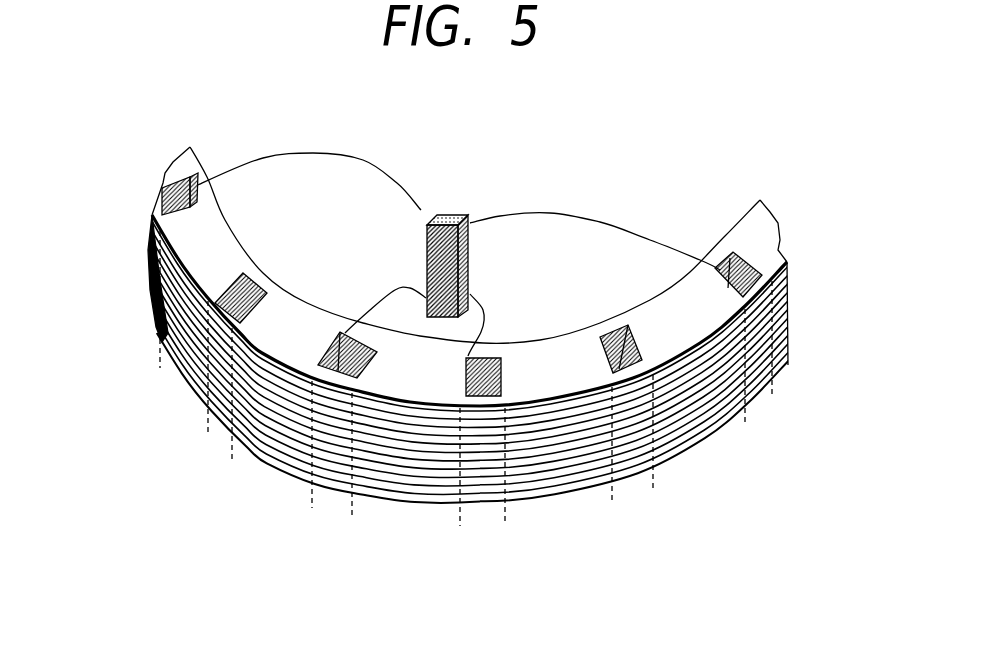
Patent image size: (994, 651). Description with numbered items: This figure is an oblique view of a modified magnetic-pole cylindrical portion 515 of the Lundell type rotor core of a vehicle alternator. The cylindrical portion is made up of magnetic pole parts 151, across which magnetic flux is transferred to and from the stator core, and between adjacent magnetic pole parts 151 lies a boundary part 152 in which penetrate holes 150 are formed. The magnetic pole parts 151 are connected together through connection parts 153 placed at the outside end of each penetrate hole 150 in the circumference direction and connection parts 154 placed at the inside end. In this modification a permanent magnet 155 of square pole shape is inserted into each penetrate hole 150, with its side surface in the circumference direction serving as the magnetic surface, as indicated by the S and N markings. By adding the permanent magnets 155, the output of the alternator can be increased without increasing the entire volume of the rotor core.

The penetrate hole 150 is at (616, 330).
The magnetic pole part 151 is at (226, 216).
The boundary part 152 is at (202, 167).
The connection part 153 is at (217, 317).
The connection part 154 is at (262, 278).
The permanent magnet 155 is at (443, 214).
The magnetic-pole cylindrical portion 515 is at (784, 423).